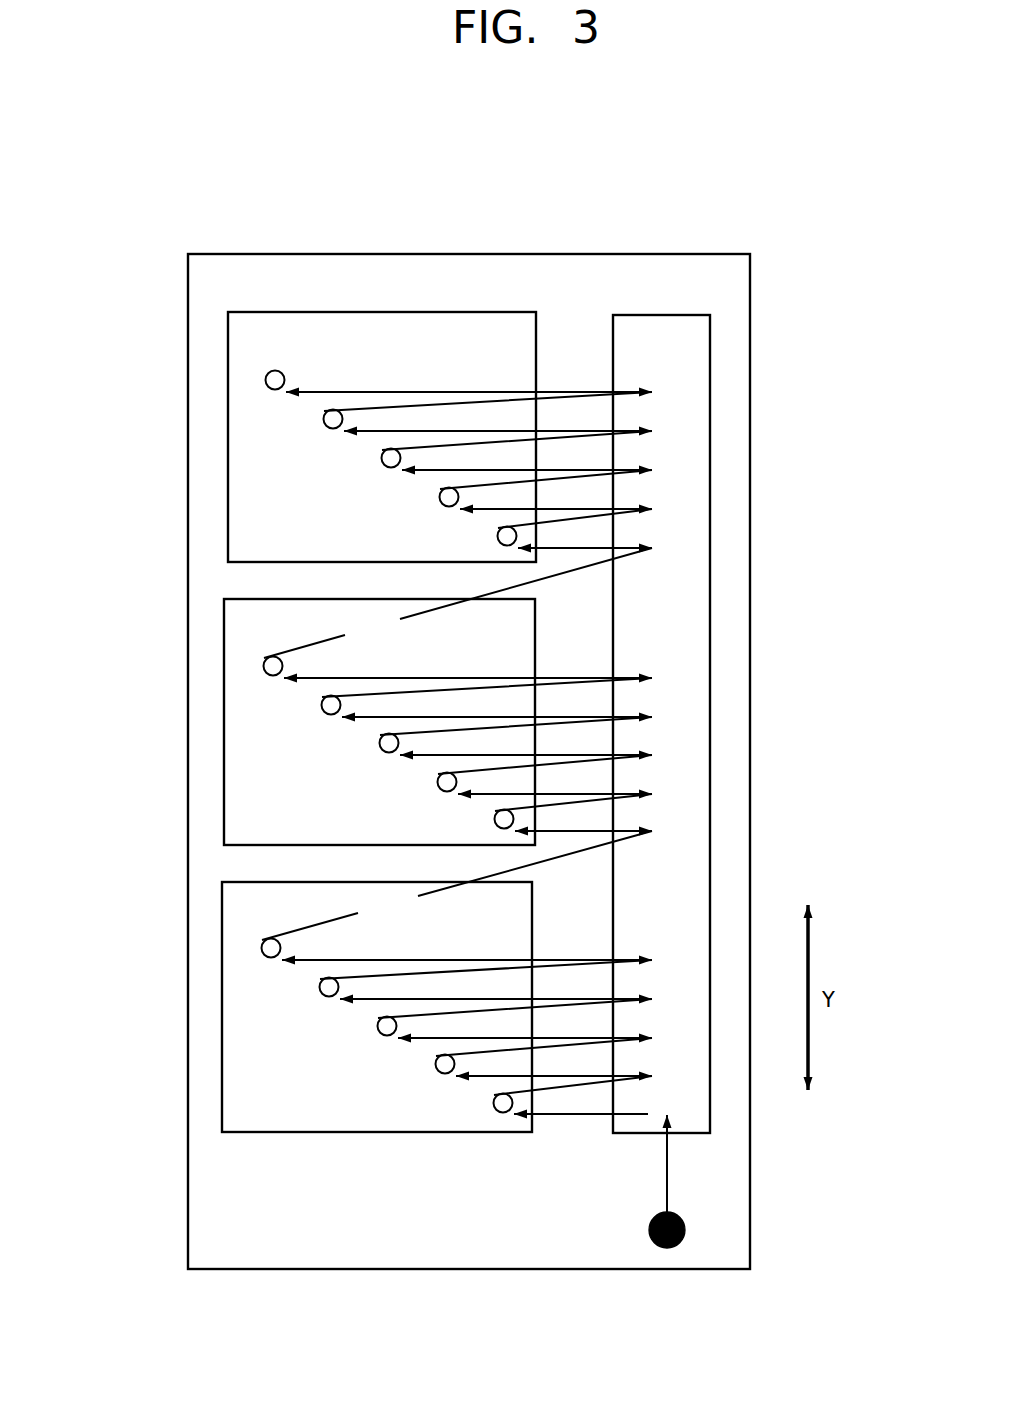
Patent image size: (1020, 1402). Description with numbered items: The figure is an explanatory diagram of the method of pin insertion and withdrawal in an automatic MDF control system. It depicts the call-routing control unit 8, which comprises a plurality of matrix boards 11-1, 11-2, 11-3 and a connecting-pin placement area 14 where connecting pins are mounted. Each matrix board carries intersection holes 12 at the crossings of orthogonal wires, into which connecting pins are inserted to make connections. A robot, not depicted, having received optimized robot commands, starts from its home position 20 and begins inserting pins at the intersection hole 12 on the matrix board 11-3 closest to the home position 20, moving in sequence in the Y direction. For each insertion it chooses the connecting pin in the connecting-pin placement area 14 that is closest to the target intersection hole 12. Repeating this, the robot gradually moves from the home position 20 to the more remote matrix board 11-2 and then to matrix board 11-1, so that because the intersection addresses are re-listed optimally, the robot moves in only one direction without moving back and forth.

The call-routing control unit 8 is at (442, 255).
The connecting-pin placement area 14 is at (657, 313).
The matrix board 11-1 is at (227, 368).
The matrix board 11-2 is at (224, 673).
The matrix board 11-3 is at (352, 1084).
The intersection hole 12 is at (491, 1103).
The home position 20 is at (682, 1240).